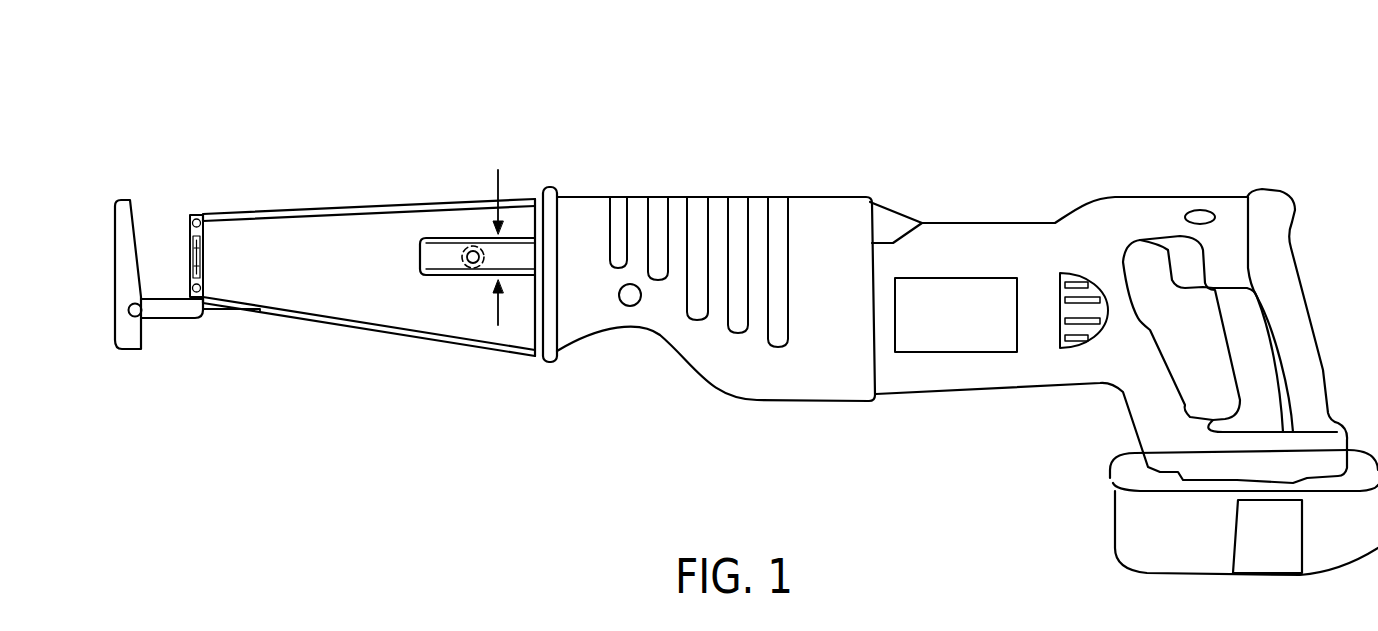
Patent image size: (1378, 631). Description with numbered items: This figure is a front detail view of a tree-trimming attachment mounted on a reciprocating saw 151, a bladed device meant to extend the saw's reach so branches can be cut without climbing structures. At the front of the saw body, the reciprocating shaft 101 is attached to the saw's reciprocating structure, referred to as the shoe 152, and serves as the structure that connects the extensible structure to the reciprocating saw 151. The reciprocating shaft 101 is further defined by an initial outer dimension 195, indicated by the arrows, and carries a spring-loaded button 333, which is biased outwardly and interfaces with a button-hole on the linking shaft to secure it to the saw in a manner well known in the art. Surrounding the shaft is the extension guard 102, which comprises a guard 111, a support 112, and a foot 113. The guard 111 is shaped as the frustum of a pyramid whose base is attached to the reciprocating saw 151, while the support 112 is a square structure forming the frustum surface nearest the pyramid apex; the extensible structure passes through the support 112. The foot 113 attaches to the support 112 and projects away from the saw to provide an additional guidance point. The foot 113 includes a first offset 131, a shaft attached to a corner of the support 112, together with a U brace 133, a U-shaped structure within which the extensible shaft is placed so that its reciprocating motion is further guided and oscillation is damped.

The reciprocating shaft 101 is at (438, 250).
The extension guard 102 is at (320, 212).
The guard 111 is at (406, 333).
The support 112 is at (190, 253).
The foot 113 is at (115, 272).
The first offset 131 is at (177, 312).
The U brace 133 is at (127, 337).
The reciprocating saw 151 is at (847, 196).
The shoe 152 is at (515, 262).
The initial outer dimension 195 is at (498, 227).
The spring-loaded button 333 is at (468, 252).